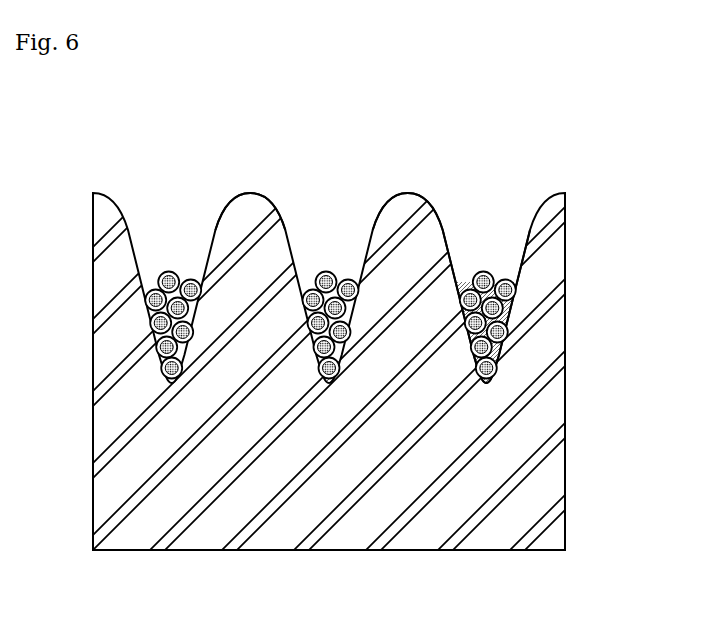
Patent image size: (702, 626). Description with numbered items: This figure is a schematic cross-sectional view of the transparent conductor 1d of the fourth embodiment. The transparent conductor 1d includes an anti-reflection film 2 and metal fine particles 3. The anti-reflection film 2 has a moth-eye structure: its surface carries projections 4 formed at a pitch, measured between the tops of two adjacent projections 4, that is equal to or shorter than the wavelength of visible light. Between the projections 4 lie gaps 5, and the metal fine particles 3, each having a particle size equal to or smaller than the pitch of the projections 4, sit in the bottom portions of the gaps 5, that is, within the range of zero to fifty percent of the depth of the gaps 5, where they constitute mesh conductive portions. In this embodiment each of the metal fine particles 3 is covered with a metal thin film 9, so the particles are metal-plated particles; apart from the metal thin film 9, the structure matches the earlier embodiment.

The transparent conductor 1d is at (52, 161).
The anti-reflection film 2 is at (543, 455).
The metal fine particles 3 is at (507, 333).
The projections 4 is at (407, 255).
The gaps 5 is at (490, 257).
The metal thin film 9 is at (507, 352).